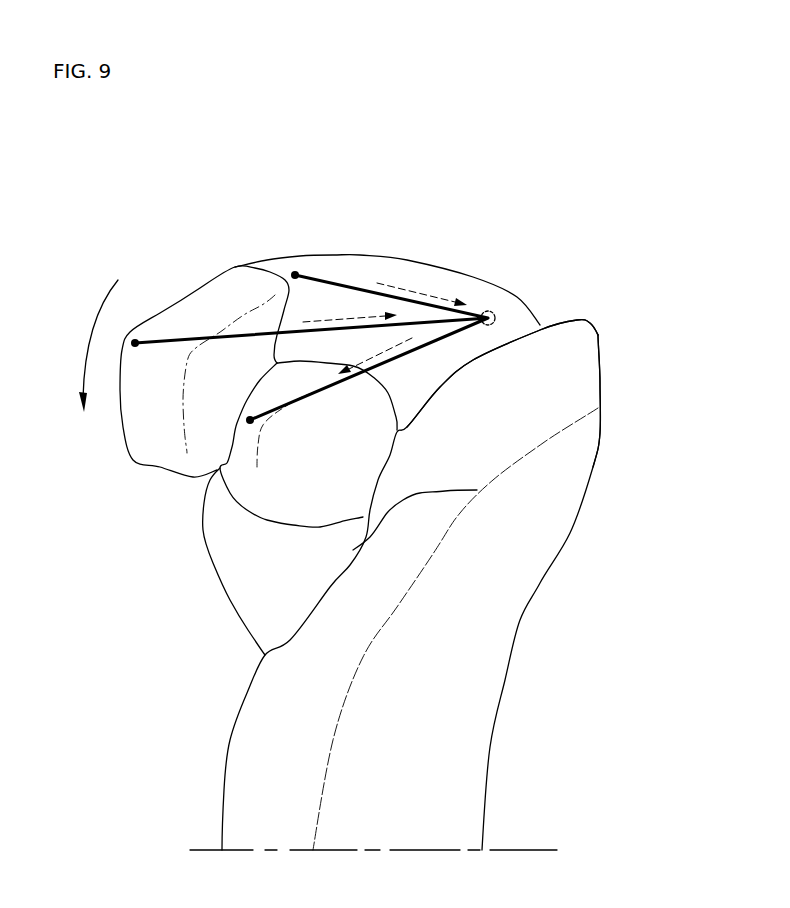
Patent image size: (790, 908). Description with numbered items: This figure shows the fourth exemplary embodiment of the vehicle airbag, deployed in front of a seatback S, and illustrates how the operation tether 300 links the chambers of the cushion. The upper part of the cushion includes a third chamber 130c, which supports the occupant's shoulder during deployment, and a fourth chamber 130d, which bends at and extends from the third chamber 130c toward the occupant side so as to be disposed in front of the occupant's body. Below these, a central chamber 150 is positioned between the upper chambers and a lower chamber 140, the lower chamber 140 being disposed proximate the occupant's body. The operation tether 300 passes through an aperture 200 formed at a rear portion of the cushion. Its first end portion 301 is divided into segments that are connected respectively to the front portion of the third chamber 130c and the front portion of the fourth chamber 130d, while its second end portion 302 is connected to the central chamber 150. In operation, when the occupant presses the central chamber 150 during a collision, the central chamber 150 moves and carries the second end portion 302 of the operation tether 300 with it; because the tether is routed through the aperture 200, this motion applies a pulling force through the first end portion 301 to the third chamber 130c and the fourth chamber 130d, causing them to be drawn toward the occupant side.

The seatback S is at (470, 747).
The operation tether 300 is at (497, 406).
The second end portion 302 is at (350, 382).
The lower chamber 140 is at (252, 592).
The central chamber 150 is at (267, 493).
The fourth chamber 130d is at (213, 297).
The third chamber 130c is at (363, 277).
The first end portion 301 is at (240, 320).
The aperture 200 is at (497, 313).